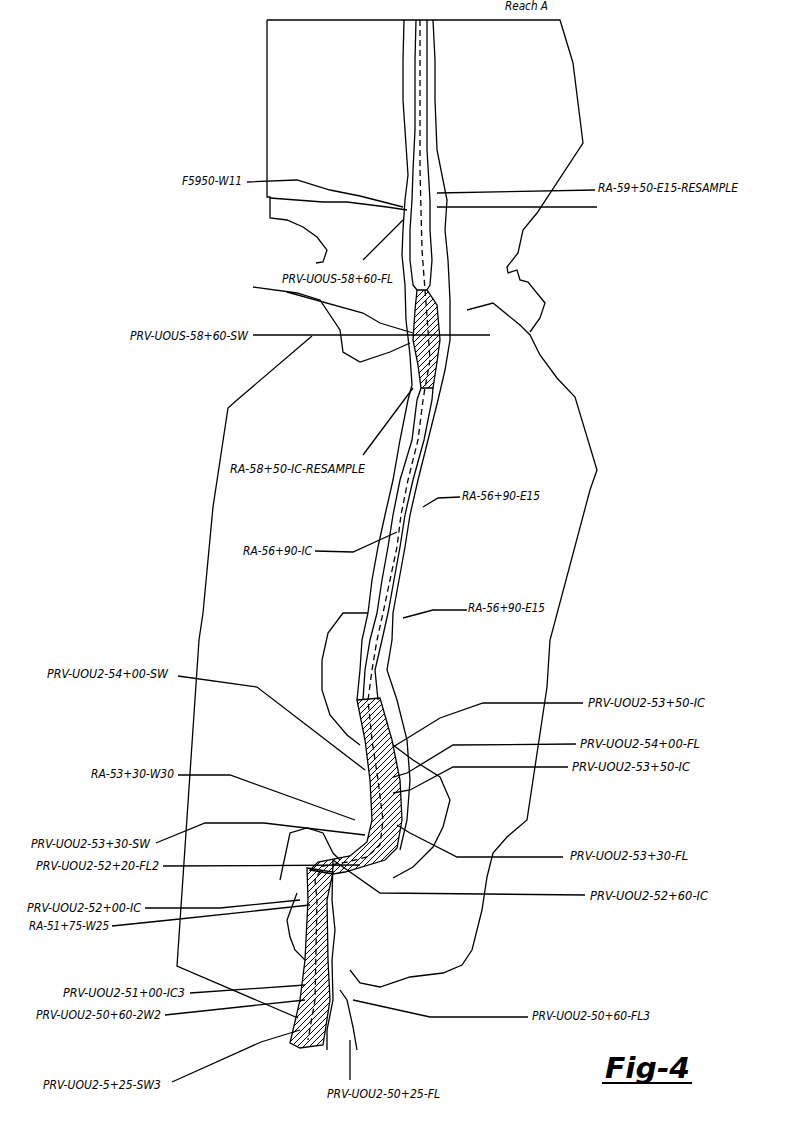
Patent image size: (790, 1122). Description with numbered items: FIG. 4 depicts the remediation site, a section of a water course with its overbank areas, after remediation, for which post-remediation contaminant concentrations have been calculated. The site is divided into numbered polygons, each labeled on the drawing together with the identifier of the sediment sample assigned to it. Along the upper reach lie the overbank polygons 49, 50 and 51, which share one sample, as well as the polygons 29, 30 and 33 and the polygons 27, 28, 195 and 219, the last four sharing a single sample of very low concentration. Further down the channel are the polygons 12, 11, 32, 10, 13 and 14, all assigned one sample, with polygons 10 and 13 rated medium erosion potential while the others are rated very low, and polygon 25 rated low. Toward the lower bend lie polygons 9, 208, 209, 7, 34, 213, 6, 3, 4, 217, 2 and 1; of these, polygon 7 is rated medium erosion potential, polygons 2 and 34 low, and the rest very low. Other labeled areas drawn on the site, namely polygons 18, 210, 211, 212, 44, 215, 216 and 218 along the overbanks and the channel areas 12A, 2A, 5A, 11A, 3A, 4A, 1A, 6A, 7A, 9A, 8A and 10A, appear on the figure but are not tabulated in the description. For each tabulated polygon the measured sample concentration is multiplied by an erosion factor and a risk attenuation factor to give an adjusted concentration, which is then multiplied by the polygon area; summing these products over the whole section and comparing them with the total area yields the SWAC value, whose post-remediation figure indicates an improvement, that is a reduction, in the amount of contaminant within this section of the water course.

The cross-section 12A(0) 12A is at (350, 60).
The cross-section 2A(86) 2A is at (483, 61).
The overbank polygon 49 is at (352, 101).
The overbank polygon 50 is at (501, 107).
The cross-section 18(11) 18 is at (211, 124).
The cross-section 5A(86) 5A is at (486, 138).
The overbank polygon 28 is at (244, 215).
The cross-section 11A(0) 11A is at (518, 220).
The overbank polygon 29 is at (319, 240).
The overbank polygon 51 is at (579, 259).
The overbank polygon 27 is at (325, 316).
The overbank polygon 30 is at (523, 287).
The overbank polygon 33 is at (523, 316).
The overbank polygon 219 is at (345, 374).
The overbank polygon 195 is at (355, 399).
The cross-section 218(118) 218 is at (511, 366).
The cross-section 3A(101) 3A is at (473, 402).
The overbank polygon 12 is at (173, 481).
The overbank polygon 11 is at (342, 496).
The overbank polygon 32 is at (463, 546).
The cross-section 4A(0) 4A is at (449, 572).
The overbank polygon 10 is at (296, 628).
The overbank polygon 25 is at (444, 650).
The cross-section 210(116) 210 is at (300, 716).
The cross-section 1A(86) 1A is at (451, 671).
The overbank polygon 14 is at (424, 691).
The overbank polygon 208 is at (244, 742).
The cross-section 6A(100) 6A is at (465, 730).
The cross-section 211(114) 211 is at (243, 768).
The cross-section 7A(99) 7A is at (458, 795).
The overbank polygon 9 is at (126, 795).
The overbank polygon 13 is at (505, 812).
The overbank polygon 209 is at (239, 817).
The overbank polygon 7 is at (246, 845).
The cross-section 9A(98) 9A is at (247, 879).
The cross-section 8A(97) 8A is at (480, 860).
The overbank polygon 34 is at (379, 897).
The overbank polygon 6 is at (170, 939).
The overbank polygon 3 is at (152, 956).
The cross-section 212(112) 212 is at (446, 936).
The cross-section 44(110) 44 is at (188, 967).
The overbank polygon 213 is at (453, 977).
The overbank polygon 4 is at (413, 998).
The overbank polygon 2 is at (397, 1032).
The overbank polygon 217 is at (229, 1037).
The cross-section 215(109) 215 is at (189, 1047).
The overbank polygon 1 is at (397, 1052).
The cross-section 10A(96) 10A is at (292, 1071).
The cross-section 216(107) 216 is at (249, 1073).